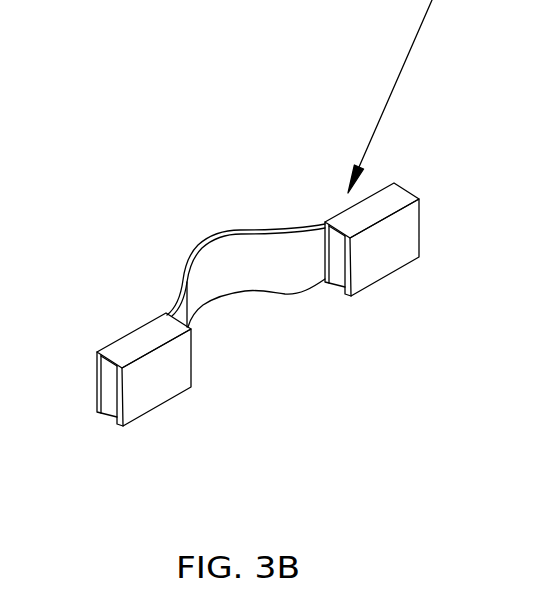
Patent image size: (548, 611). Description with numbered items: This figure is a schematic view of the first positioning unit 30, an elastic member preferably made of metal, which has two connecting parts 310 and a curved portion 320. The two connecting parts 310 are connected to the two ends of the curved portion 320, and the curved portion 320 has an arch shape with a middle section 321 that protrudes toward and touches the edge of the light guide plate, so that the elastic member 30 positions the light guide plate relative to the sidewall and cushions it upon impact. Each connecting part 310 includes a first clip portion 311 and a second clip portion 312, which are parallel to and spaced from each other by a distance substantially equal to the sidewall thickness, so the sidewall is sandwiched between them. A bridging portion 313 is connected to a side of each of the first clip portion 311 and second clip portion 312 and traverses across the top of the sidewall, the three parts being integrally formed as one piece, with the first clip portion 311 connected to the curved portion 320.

The first positioning unit 30 is at (92, 126).
The connecting part 310 is at (168, 410).
The first clip portion 311 is at (98, 387).
The second clip portion 312 is at (119, 397).
The bridging portion 313 is at (395, 202).
The curved portion 320 is at (208, 227).
The middle section 321 is at (196, 240).